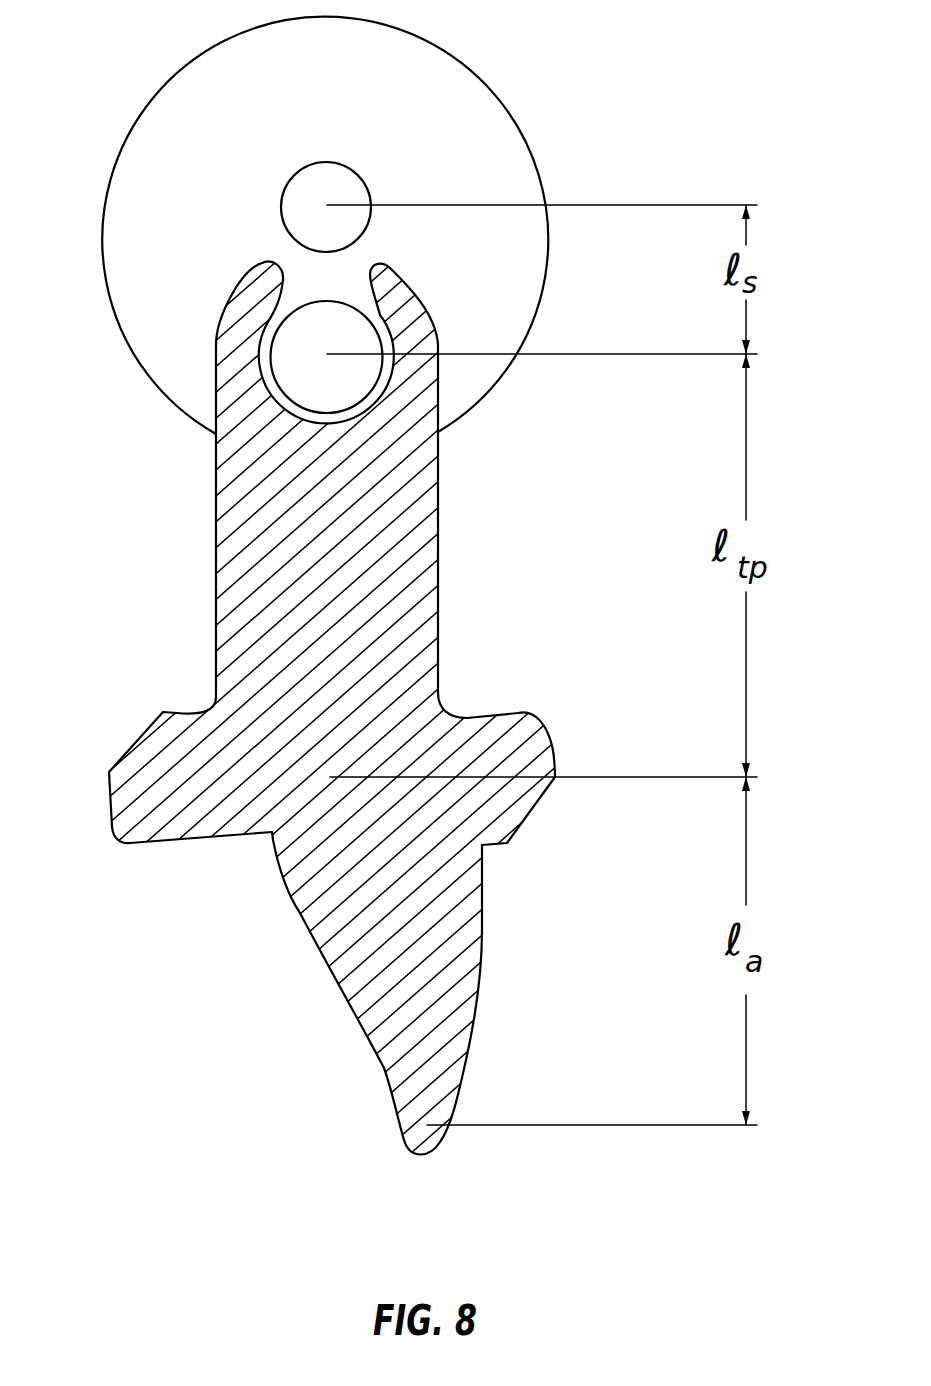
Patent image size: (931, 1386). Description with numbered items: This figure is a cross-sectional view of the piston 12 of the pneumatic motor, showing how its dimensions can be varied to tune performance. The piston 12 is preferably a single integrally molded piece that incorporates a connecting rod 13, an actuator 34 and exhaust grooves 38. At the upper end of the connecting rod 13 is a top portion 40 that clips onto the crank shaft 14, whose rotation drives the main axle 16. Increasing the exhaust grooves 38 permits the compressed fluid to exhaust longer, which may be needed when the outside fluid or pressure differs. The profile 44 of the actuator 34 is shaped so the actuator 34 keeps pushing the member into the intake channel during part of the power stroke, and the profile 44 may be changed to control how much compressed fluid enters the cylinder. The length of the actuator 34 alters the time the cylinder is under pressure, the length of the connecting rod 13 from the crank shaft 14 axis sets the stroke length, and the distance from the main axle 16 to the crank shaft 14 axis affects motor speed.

The piston 12 is at (161, 478).
The connecting rod 13 is at (387, 543).
The crank shaft 14 is at (288, 360).
The main axle 16 is at (327, 185).
The actuator 34 is at (480, 996).
The exhaust grooves 38 is at (136, 727).
The top portion 40 is at (262, 285).
The profile 44 is at (327, 993).